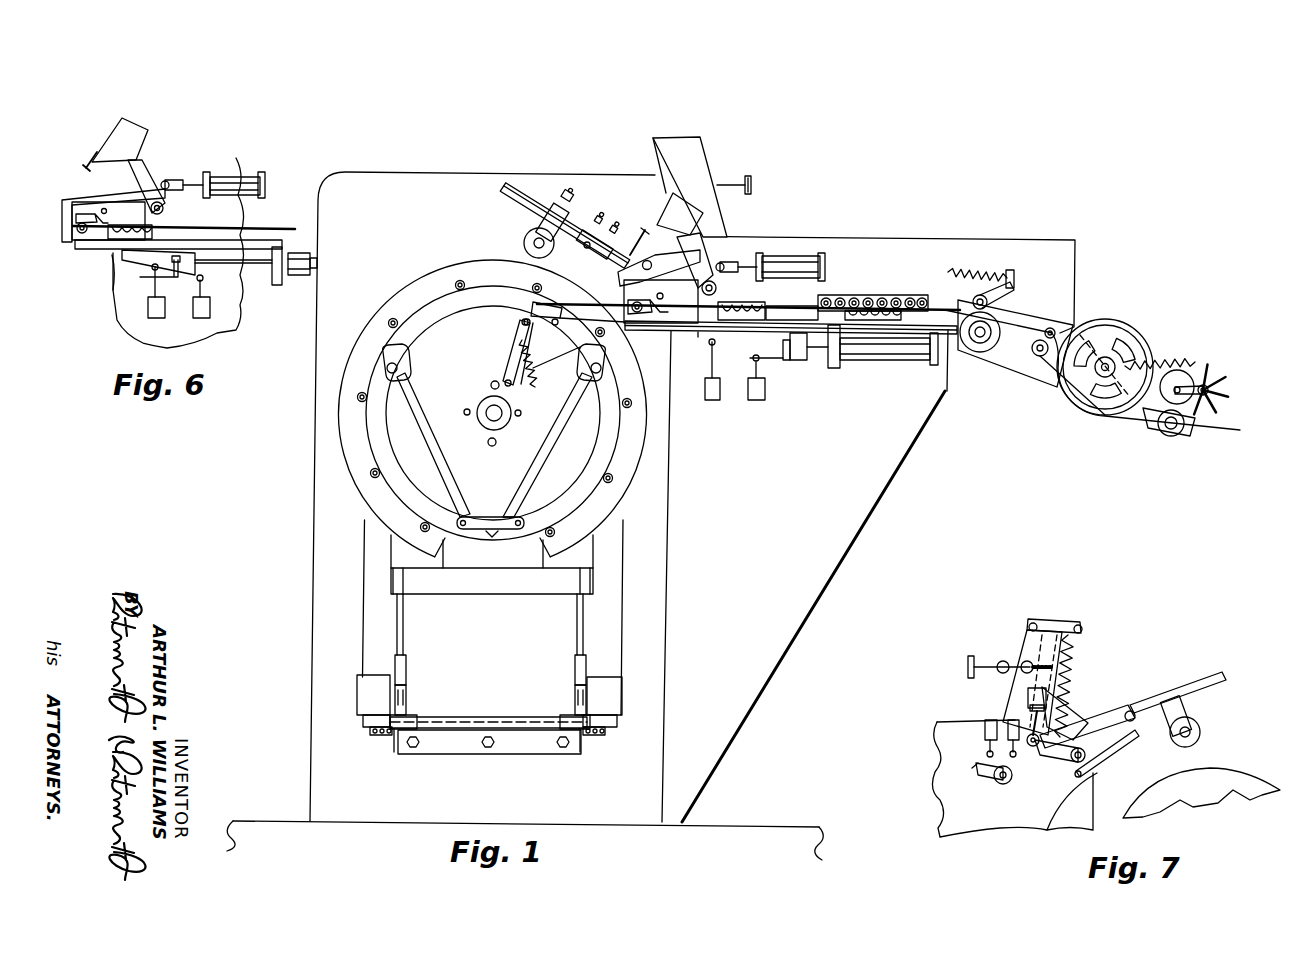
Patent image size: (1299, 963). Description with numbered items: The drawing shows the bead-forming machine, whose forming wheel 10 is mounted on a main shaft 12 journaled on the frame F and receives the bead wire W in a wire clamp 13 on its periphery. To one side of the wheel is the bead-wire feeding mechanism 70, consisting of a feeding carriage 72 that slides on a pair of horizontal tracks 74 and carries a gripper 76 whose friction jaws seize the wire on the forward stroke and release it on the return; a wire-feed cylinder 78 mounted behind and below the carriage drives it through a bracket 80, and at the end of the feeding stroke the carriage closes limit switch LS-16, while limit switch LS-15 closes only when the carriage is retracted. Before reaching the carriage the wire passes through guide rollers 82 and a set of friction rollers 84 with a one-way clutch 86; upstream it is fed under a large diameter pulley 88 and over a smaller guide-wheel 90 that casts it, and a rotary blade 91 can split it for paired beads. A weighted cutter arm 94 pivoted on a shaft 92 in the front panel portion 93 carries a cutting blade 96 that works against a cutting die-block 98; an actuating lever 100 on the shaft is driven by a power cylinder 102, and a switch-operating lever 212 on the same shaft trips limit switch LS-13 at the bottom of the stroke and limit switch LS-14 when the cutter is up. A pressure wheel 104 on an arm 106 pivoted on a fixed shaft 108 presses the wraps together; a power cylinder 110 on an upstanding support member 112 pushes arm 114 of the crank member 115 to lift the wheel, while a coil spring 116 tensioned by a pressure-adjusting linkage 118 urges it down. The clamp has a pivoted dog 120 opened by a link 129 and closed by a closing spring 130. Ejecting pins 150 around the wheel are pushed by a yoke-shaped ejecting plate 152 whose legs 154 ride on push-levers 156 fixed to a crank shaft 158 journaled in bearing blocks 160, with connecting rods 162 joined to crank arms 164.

In FIG. 1, the forming wheel 10 is at (438, 292).
In FIG. 7, the forming wheel 10 is at (1255, 790).
In FIG. 1, the main shaft 12 is at (503, 418).
In FIG. 1, the wire clamp 13 is at (553, 355).
In FIG. 1, the bead-wire feeding mechanism 70 is at (698, 337).
In FIG. 6, the bead-wire feeding mechanism 70 is at (127, 265).
In FIG. 1, the feeding carriage 72 is at (770, 316).
In FIG. 6, the feeding carriage 72 is at (125, 258).
In FIG. 1, the horizontal tracks 74 is at (687, 326).
In FIG. 6, the horizontal tracks 74 is at (252, 250).
In FIG. 1, the gripper 76 is at (765, 304).
In FIG. 6, the gripper 76 is at (148, 226).
In FIG. 1, the wire-feed cylinder 78 is at (884, 362).
In FIG. 6, the wire-feed cylinder 78 is at (302, 282).
In FIG. 1, the bracket 80 is at (793, 352).
In FIG. 1, the guide rollers 82 is at (895, 296).
In FIG. 1, the friction rollers 84 is at (1003, 310).
In FIG. 1, the one-way clutch 86 is at (978, 356).
In FIG. 1, the large diameter pulley 88 is at (1130, 337).
In FIG. 1, the guide-wheel 90 is at (1080, 330).
In FIG. 1, the rotary blade 91 is at (1160, 430).
In FIG. 1, the pivot shaft 92 is at (712, 280).
In FIG. 6, the pivot shaft 92 is at (148, 212).
In FIG. 7, the pivot shaft 92 is at (1010, 783).
In FIG. 1, the front panel portion 93 is at (757, 237).
In FIG. 6, the front panel portion 93 is at (236, 158).
In FIG. 7, the front panel portion 93 is at (937, 725).
In FIG. 1, the cutter arm 94 is at (705, 235).
In FIG. 6, the cutter arm 94 is at (135, 158).
In FIG. 7, the cutter arm 94 is at (1075, 713).
In FIG. 1, the cutting blade 96 is at (633, 250).
In FIG. 1, the cutting die-block 98 is at (623, 297).
In FIG. 6, the cutting die-block 98 is at (75, 235).
In FIG. 1, the actuating lever 100 is at (730, 274).
In FIG. 6, the actuating lever 100 is at (178, 182).
In FIG. 1, the power cylinder 102 is at (795, 252).
In FIG. 6, the power cylinder 102 is at (262, 178).
In FIG. 1, the pressure wheel 104 is at (525, 240).
In FIG. 7, the pressure wheel 104 is at (1200, 730).
In FIG. 1, the arm 106 is at (555, 190).
In FIG. 7, the arm 106 is at (1200, 682).
In FIG. 1, the fixed shaft 108 is at (640, 270).
In FIG. 6, the fixed shaft 108 is at (108, 221).
In FIG. 7, the fixed shaft 108 is at (1085, 757).
In FIG. 7, the power cylinder 110 is at (1027, 700).
In FIG. 1, the support member 112 is at (694, 150).
In FIG. 7, the support member 112 is at (1020, 650).
In FIG. 7, the arm 114 is at (1035, 750).
In FIG. 7, the crank member 115 is at (1115, 715).
In FIG. 7, the coil spring 116 is at (1073, 662).
In FIG. 7, the pressure-adjusting linkage 118 is at (1031, 622).
In FIG. 1, the pivoted dog 120 is at (531, 311).
In FIG. 1, the link 129 is at (512, 362).
In FIG. 1, the closing spring 130 is at (538, 380).
In FIG. 1, the ejecting pins 150 is at (398, 321).
In FIG. 1, the ejecting plate 152 is at (357, 362).
In FIG. 1, the legs 154 is at (372, 597).
In FIG. 1, the push-levers 156 is at (363, 720).
In FIG. 1, the crank shaft 158 is at (507, 720).
In FIG. 1, the bearing blocks 160 is at (416, 707).
In FIG. 1, the connecting rods 162 is at (405, 626).
In FIG. 1, the crank arms 164 is at (393, 745).
In FIG. 7, the switch-operating lever 212 is at (985, 780).
In FIG. 7, the limit switch LS-13 is at (1005, 756).
In FIG. 7, the limit switch LS-14 is at (985, 725).
In FIG. 1, the limit switch LS-15 is at (757, 402).
In FIG. 6, the limit switch LS-15 is at (205, 320).
In FIG. 1, the limit switch LS-16 is at (712, 402).
In FIG. 6, the limit switch LS-16 is at (155, 315).
In FIG. 1, the frame F is at (312, 537).
In FIG. 1, the bead wire W is at (583, 292).
In FIG. 6, the bead wire W is at (270, 228).